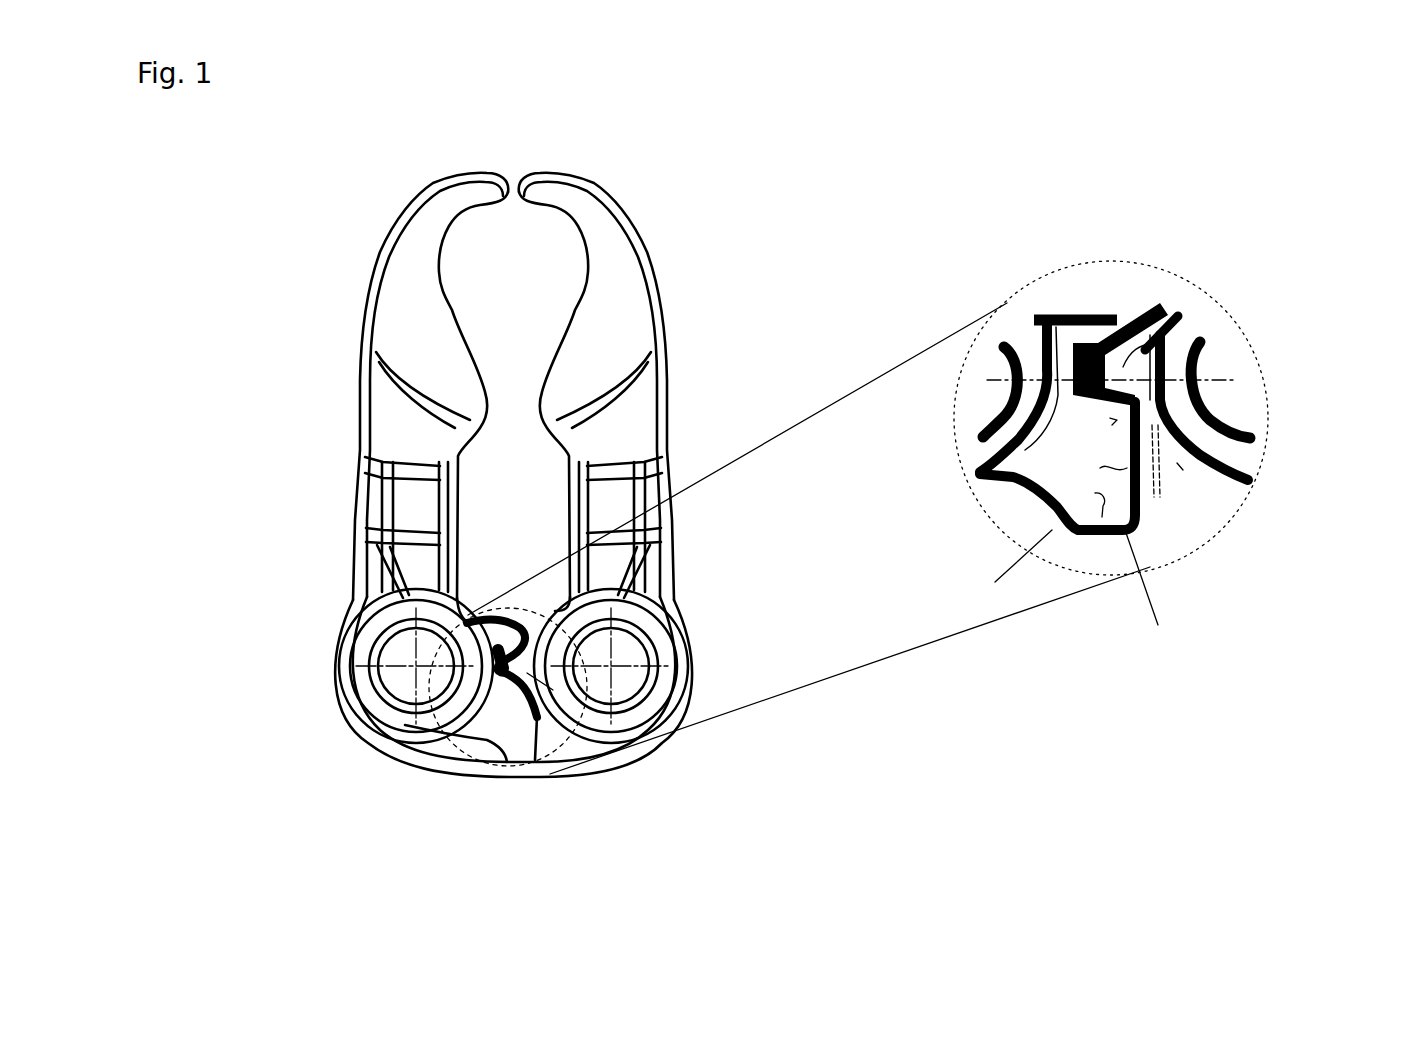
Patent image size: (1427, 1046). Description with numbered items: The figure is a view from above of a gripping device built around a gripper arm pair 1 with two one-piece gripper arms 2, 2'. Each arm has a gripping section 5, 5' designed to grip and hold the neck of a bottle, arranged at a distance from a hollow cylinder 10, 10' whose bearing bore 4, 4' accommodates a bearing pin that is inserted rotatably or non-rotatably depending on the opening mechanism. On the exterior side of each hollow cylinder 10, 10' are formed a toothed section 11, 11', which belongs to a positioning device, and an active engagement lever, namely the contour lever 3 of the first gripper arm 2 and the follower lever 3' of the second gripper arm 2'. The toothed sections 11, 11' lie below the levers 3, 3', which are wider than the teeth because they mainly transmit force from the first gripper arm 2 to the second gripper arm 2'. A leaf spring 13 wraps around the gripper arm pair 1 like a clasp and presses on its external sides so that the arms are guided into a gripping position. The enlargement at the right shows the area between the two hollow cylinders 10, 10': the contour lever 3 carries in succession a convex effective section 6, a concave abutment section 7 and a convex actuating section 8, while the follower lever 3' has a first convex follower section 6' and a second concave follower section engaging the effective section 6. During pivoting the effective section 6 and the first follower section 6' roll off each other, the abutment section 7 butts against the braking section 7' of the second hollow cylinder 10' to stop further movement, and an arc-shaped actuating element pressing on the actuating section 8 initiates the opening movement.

The gripper arm pair 1 is at (712, 155).
The first gripper arm 2 is at (349, 386).
The second gripper arm 2' is at (685, 386).
The contour lever 3 is at (757, 585).
The follower lever 3' is at (867, 434).
The bearing bore 4 is at (366, 690).
The bearing bore 4' is at (683, 692).
The gripping section 5 is at (398, 396).
The gripping section 5' is at (639, 396).
The effective section 6 is at (1089, 433).
The first follower section 6' is at (1120, 253).
The abutment section 7 is at (1102, 468).
The braking section 7' is at (1201, 492).
The actuating section 8 is at (1091, 501).
The hollow cylinder 10 is at (627, 466).
The hollow cylinder 10' is at (964, 542).
The first toothed section 11 is at (1111, 267).
The second toothed section 11' is at (1164, 473).
The leaf spring 13 is at (387, 753).